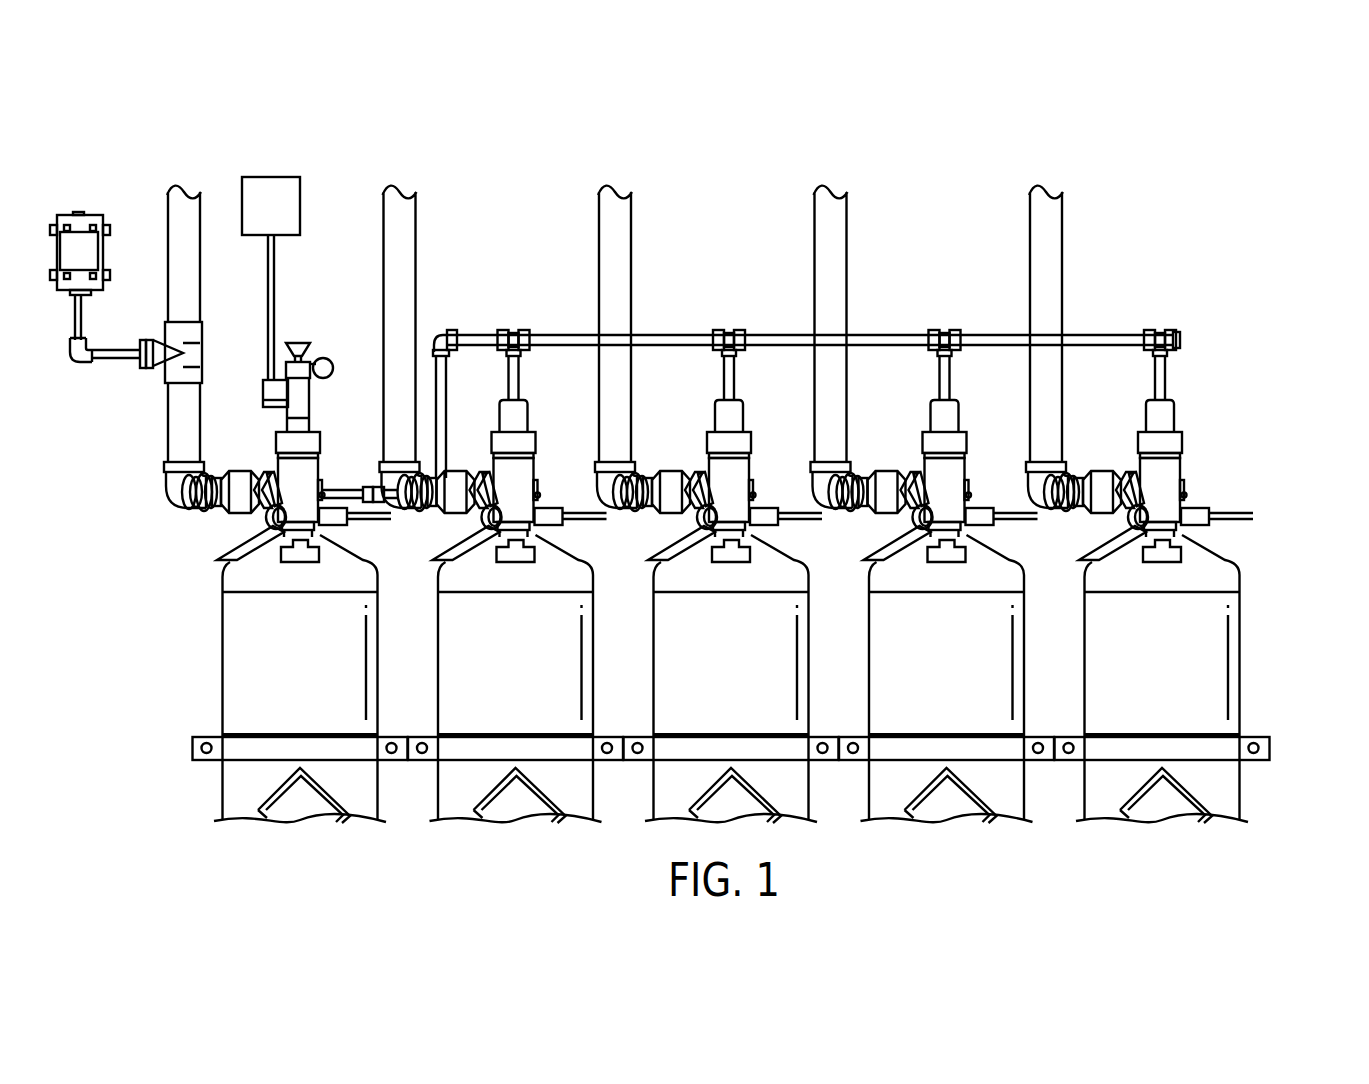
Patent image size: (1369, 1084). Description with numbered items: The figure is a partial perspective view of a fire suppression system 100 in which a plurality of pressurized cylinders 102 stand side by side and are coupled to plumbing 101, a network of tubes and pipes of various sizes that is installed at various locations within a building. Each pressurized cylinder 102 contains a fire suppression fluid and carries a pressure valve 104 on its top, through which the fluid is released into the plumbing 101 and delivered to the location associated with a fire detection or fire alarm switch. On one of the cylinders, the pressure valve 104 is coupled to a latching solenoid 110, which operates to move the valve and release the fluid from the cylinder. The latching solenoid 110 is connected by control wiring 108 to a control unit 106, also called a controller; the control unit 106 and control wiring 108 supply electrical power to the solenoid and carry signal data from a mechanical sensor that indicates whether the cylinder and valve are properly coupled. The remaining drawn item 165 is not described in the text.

The fire suppression system 100 is at (1055, 121).
The plumbing 101 is at (806, 276).
The pressurized cylinder 102 is at (222, 572).
The pressure valve 104 is at (320, 440).
The control unit 106 is at (268, 177).
The control wiring 108 is at (268, 268).
The latching solenoid 110 is at (298, 343).
The tank body 165 is at (208, 655).